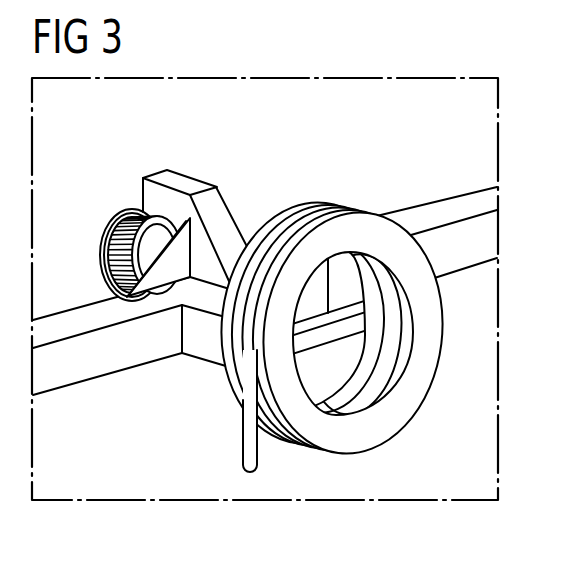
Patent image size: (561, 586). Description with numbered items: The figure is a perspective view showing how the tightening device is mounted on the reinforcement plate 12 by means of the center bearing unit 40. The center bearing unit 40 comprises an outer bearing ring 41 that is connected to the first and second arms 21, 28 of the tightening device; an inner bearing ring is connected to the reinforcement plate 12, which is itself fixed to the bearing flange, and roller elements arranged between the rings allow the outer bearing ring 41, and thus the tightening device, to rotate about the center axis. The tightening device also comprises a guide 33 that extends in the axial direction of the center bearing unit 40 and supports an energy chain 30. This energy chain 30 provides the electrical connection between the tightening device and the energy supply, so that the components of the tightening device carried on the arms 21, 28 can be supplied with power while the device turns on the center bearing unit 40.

The reinforcement plate 12 is at (97, 501).
The first arm 21 is at (78, 320).
The second arm 28 is at (432, 214).
The energy chain 30 is at (246, 457).
The guide 33 is at (341, 450).
The center bearing unit 40 is at (247, 182).
The outer bearing ring 41 is at (116, 247).